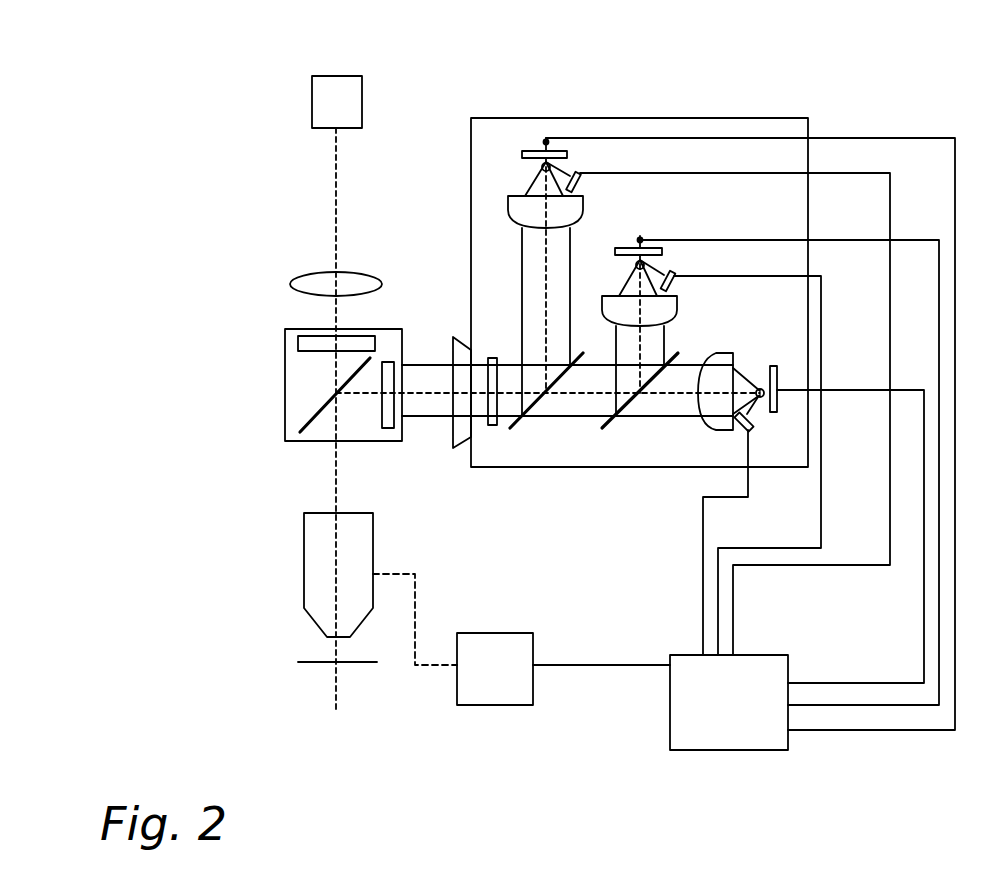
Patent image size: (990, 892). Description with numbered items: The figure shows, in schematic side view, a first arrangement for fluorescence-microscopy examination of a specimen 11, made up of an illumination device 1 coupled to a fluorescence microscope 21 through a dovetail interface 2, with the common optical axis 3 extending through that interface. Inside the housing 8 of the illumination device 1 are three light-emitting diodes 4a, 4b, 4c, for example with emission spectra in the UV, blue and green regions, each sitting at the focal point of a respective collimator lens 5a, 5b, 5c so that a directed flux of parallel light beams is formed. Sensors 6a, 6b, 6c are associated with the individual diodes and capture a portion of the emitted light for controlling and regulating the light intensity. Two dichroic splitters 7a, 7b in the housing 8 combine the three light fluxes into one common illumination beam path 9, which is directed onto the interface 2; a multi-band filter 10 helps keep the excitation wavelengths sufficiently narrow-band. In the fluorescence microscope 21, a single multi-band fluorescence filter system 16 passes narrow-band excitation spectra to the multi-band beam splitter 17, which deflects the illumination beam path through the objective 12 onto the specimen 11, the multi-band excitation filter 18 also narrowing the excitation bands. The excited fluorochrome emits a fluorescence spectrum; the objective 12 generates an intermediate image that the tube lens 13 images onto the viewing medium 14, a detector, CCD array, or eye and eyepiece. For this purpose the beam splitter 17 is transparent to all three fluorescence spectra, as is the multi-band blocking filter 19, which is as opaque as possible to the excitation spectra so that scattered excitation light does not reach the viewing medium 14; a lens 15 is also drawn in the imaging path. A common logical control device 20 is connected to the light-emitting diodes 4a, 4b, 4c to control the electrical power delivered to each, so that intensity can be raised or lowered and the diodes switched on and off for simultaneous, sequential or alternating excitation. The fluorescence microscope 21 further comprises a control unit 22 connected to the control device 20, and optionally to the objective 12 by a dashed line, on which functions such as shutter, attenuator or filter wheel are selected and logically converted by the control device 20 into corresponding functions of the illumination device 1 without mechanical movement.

The illumination device 1 is at (490, 137).
The interface 2 is at (462, 353).
The optical axis 3 is at (423, 395).
The light-emitting diode 4a is at (537, 150).
The light-emitting diode 4b is at (641, 247).
The light-emitting diode 4c is at (775, 378).
The collimator lens 5a is at (580, 176).
The collimator lens 5b is at (674, 278).
The collimator lens 5c is at (722, 424).
The sensor 6a is at (570, 208).
The sensor 6b is at (667, 303).
The sensor 6c is at (752, 428).
The dichroic splitter 7a is at (515, 427).
The dichroic splitter 7b is at (612, 420).
The housing 8 is at (805, 118).
The illumination beam path 9 is at (510, 365).
The multi-band filter 10 is at (486, 356).
The specimen 11 is at (323, 663).
The objective 12 is at (310, 588).
The tube lens 13 is at (335, 240).
The viewing medium 14 is at (357, 113).
The lens 15 is at (313, 280).
The fluorescence filter system 16 is at (285, 424).
The multi-band beam splitter 17 is at (323, 417).
The multi-band excitation filter 18 is at (392, 360).
The multi-band blocking filter 19 is at (297, 337).
The control device 20 is at (770, 737).
The fluorescence microscope 21 is at (148, 146).
The control unit 22 is at (493, 705).